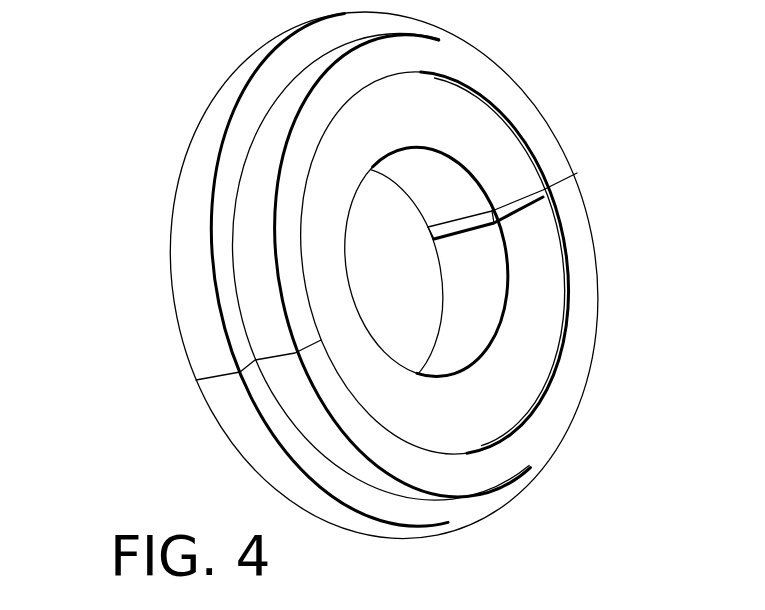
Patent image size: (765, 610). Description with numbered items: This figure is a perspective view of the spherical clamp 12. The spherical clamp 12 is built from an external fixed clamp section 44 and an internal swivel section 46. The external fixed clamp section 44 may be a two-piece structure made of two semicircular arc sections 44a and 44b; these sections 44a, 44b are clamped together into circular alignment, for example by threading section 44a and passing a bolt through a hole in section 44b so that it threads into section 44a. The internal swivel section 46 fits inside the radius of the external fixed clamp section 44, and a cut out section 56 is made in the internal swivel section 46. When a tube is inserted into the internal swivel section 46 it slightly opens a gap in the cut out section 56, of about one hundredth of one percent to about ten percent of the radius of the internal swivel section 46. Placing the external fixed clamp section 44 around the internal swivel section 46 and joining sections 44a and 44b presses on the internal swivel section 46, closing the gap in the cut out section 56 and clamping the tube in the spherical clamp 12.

The spherical clamp 12 is at (152, 119).
The external fixed clamp section 44 is at (521, 96).
The semicircular arc section 44a is at (558, 158).
The semicircular arc section 44b is at (581, 240).
The internal swivel section 46 is at (460, 329).
The cut out section 56 is at (418, 239).